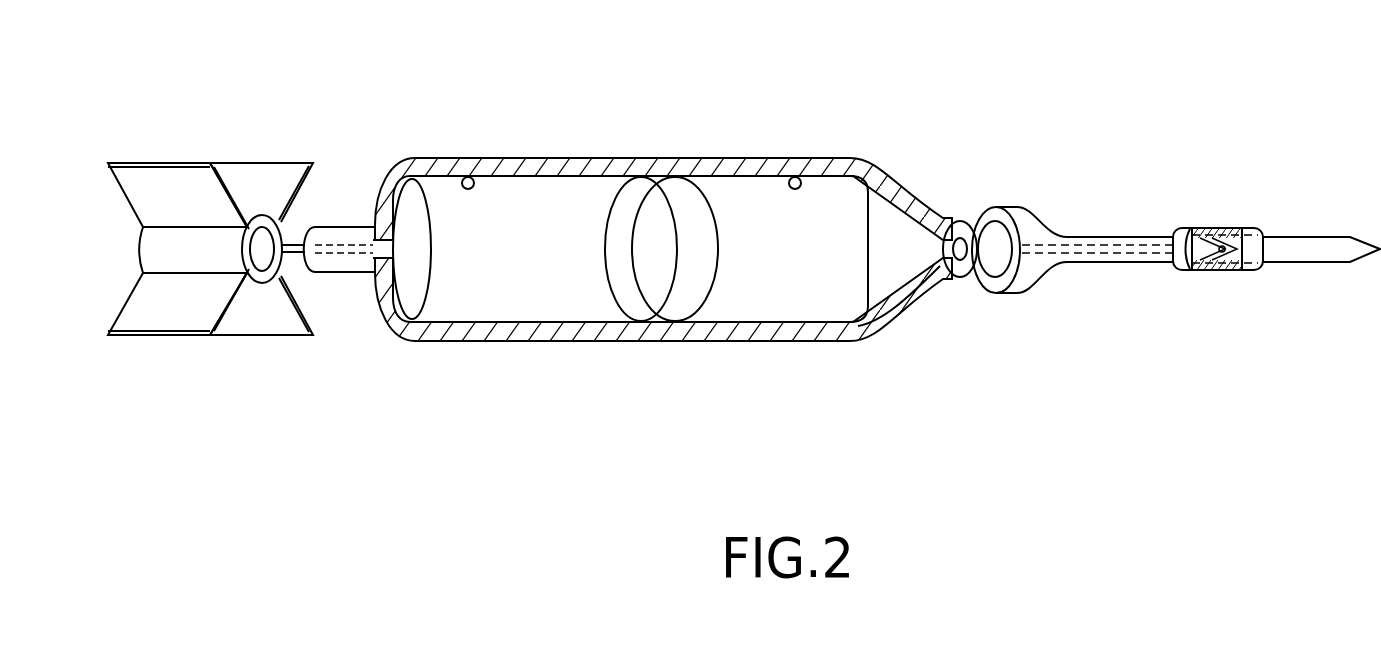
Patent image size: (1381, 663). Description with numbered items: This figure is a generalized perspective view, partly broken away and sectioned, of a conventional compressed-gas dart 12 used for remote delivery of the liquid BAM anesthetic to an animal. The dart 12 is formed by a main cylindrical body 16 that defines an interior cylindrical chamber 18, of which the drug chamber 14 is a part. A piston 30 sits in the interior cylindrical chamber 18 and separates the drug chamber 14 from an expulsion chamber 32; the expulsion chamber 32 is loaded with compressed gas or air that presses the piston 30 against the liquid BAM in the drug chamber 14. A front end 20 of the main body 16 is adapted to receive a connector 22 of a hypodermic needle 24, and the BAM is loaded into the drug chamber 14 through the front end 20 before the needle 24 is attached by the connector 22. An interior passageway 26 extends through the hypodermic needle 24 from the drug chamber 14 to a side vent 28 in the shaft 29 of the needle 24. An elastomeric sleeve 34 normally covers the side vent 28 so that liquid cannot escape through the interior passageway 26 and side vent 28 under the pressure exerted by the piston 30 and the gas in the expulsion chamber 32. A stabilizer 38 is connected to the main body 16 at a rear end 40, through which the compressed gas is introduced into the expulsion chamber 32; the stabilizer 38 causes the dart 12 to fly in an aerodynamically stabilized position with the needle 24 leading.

The dart 12 is at (920, 72).
The drug chamber 14 is at (800, 310).
The main cylindrical body 16 is at (555, 162).
The interior cylindrical chamber 18 is at (468, 178).
The front end 20 is at (943, 220).
The connector 22 is at (1028, 283).
The hypodermic needle 24 is at (1113, 233).
The interior passageway 26 is at (1085, 273).
The side vent 28 is at (1217, 268).
The shaft 29 is at (1143, 262).
The piston 30 is at (640, 308).
The expulsion chamber 32 is at (452, 310).
The elastomeric sleeve 34 is at (1240, 228).
The stabilizer 38 is at (130, 163).
The rear end 40 is at (337, 222).